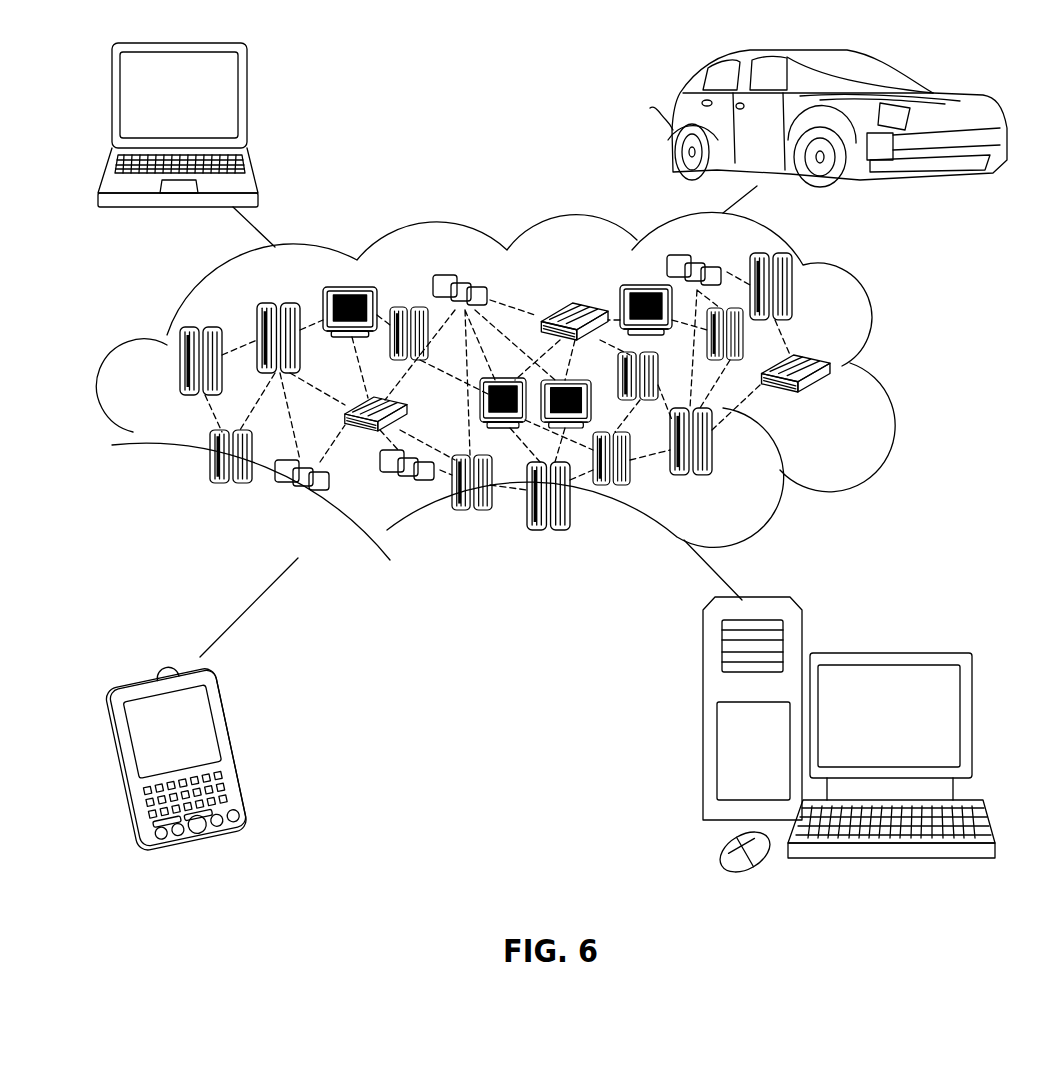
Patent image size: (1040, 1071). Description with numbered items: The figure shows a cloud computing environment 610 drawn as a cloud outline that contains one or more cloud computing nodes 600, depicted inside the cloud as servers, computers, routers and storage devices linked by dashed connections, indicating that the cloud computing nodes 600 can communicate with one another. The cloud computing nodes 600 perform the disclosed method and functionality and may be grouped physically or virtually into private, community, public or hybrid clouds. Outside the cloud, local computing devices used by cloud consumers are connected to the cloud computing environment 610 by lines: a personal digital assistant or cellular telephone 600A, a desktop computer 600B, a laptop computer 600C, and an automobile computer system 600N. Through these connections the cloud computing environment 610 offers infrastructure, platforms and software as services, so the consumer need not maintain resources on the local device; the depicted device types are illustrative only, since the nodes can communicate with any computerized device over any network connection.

The cloud computing nodes 600 is at (533, 386).
The cloud computing environment 610 is at (890, 372).
The personal digital assistant (PDA) or cellular telephone 600A is at (233, 743).
The desktop computer 600B is at (887, 653).
The laptop computer 600C is at (248, 103).
The automobile computer system 600N is at (771, 131).